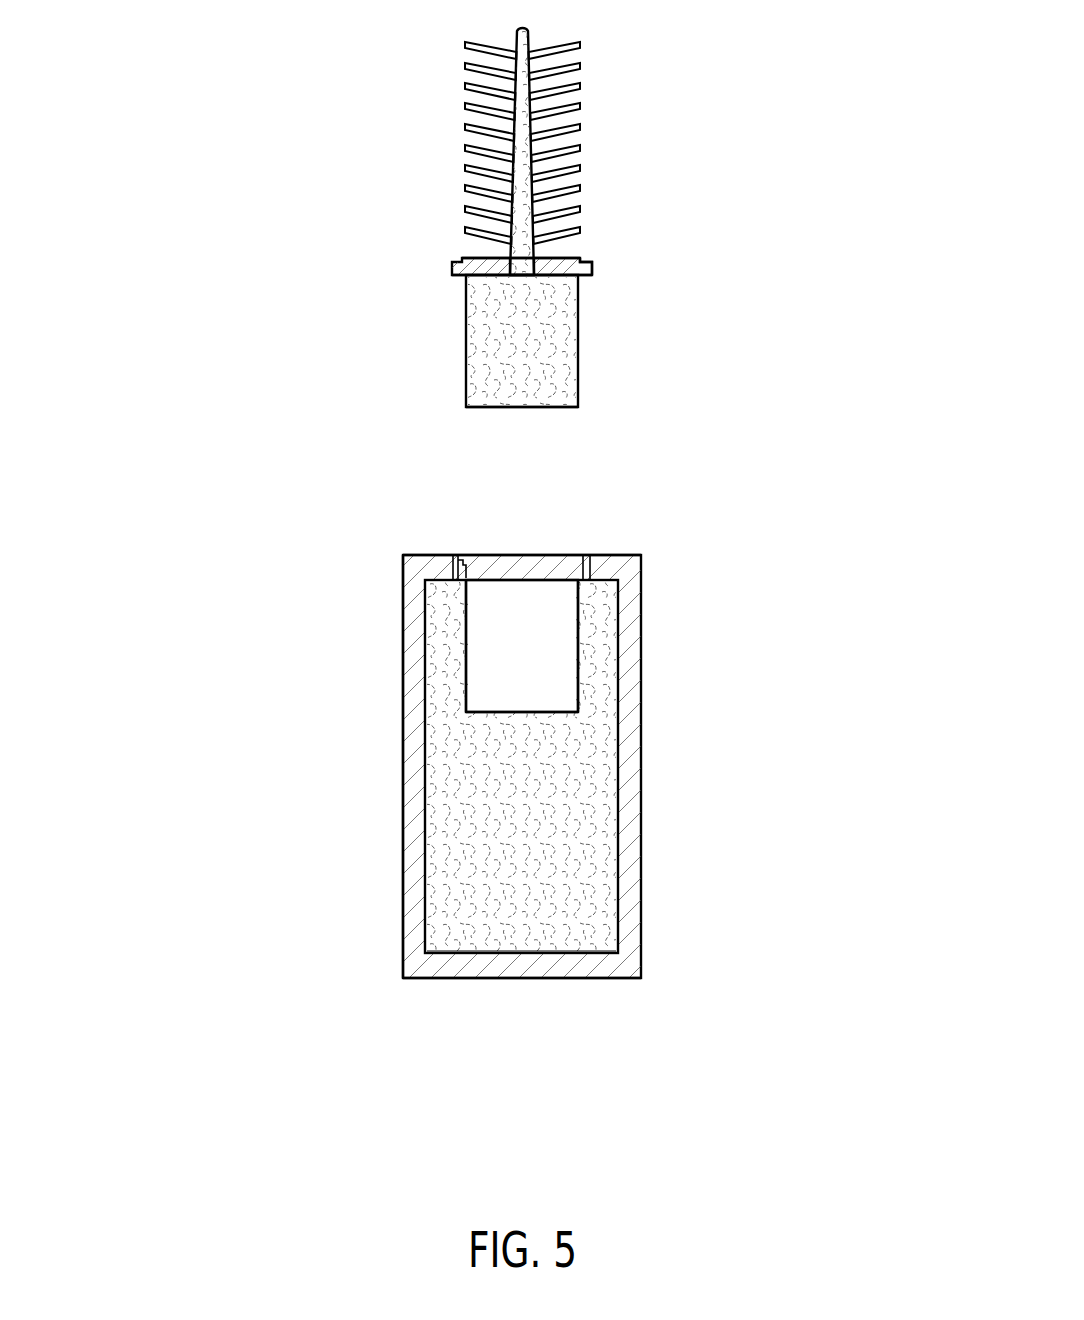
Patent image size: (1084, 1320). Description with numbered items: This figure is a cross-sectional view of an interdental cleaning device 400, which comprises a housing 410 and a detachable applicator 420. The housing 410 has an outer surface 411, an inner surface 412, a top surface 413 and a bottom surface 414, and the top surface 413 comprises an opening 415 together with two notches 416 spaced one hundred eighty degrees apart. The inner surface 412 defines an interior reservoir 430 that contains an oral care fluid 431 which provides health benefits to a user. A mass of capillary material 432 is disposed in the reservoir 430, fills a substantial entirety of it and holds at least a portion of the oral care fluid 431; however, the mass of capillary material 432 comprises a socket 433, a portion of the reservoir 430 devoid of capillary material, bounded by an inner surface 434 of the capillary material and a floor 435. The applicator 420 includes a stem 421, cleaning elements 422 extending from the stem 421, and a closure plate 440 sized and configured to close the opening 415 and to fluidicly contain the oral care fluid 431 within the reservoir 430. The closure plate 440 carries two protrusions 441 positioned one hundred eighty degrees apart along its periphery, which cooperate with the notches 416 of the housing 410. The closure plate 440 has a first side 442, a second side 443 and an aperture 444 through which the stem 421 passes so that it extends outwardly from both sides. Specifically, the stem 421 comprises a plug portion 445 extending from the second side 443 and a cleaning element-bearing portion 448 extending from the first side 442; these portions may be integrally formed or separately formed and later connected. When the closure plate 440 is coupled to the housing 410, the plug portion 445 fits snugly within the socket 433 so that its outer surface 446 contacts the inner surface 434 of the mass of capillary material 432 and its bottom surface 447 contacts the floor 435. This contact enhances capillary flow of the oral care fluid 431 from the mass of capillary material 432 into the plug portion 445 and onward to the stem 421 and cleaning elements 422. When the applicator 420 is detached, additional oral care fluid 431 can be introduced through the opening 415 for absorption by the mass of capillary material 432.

The interdental cleaning device 400 is at (181, 126).
The housing 410 is at (394, 634).
The outer surface 411 is at (403, 712).
The inner surface 412 is at (435, 838).
The top surface 413 is at (630, 556).
The bottom surface 414 is at (612, 978).
The opening 415 is at (577, 545).
The notches 416 is at (590, 556).
The applicator 420 is at (428, 126).
The stem 421 is at (528, 33).
The cleaning elements 422 is at (583, 100).
The interior reservoir 430 is at (614, 690).
The oral care fluid 431 is at (593, 775).
The mass of capillary material 432 is at (475, 885).
The socket 433 is at (485, 627).
The inner surface 434 is at (570, 640).
The floor 435 is at (537, 692).
The closure plate 440 is at (573, 254).
The protrusions 441 is at (592, 272).
The first side 442 is at (480, 258).
The second side 443 is at (563, 280).
The aperture 444 is at (517, 282).
The plug portion 445 is at (560, 365).
The outer surface 446 is at (474, 348).
The bottom surface 447 is at (484, 405).
The cleaning element-bearing portion 448 is at (597, 155).